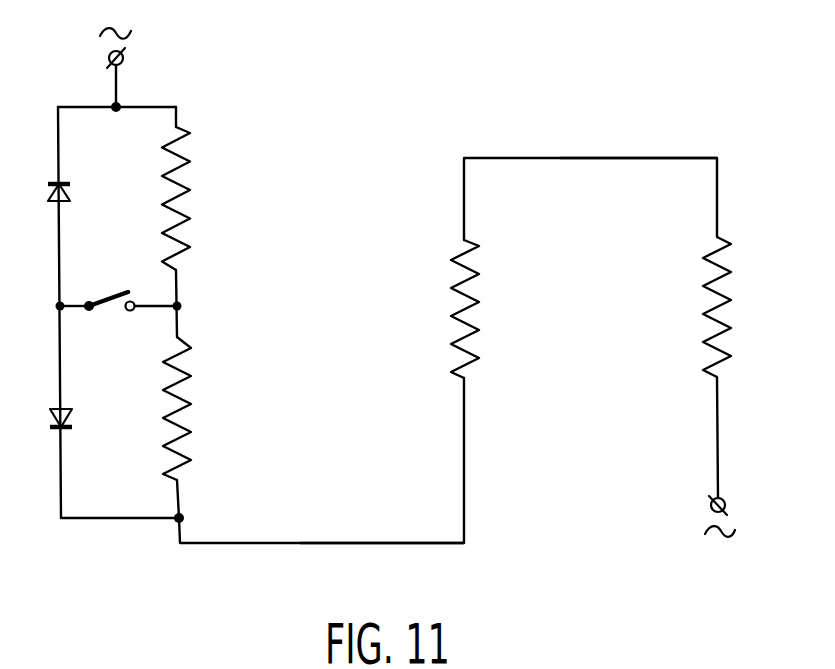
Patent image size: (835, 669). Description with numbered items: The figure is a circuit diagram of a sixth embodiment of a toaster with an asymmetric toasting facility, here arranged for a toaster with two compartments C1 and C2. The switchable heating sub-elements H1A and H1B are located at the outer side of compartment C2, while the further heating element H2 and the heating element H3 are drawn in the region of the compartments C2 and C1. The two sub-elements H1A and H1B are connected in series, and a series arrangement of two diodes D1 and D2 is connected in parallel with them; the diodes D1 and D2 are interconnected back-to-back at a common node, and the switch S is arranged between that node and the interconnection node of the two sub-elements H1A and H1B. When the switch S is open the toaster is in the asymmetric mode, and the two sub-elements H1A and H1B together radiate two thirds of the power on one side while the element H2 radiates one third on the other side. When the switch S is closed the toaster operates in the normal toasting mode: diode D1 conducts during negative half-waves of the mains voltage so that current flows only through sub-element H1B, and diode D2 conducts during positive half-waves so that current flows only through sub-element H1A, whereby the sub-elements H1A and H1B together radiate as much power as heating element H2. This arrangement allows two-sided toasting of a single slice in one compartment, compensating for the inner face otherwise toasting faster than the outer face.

The diode D1 is at (71, 196).
The diode D2 is at (72, 414).
The switch S is at (110, 310).
The sub-element H1A is at (190, 187).
The sub-element H1B is at (191, 398).
The heating element H2 is at (479, 296).
The third heater H3 is at (731, 296).
The compartment C1 is at (618, 327).
The compartment C2 is at (350, 327).